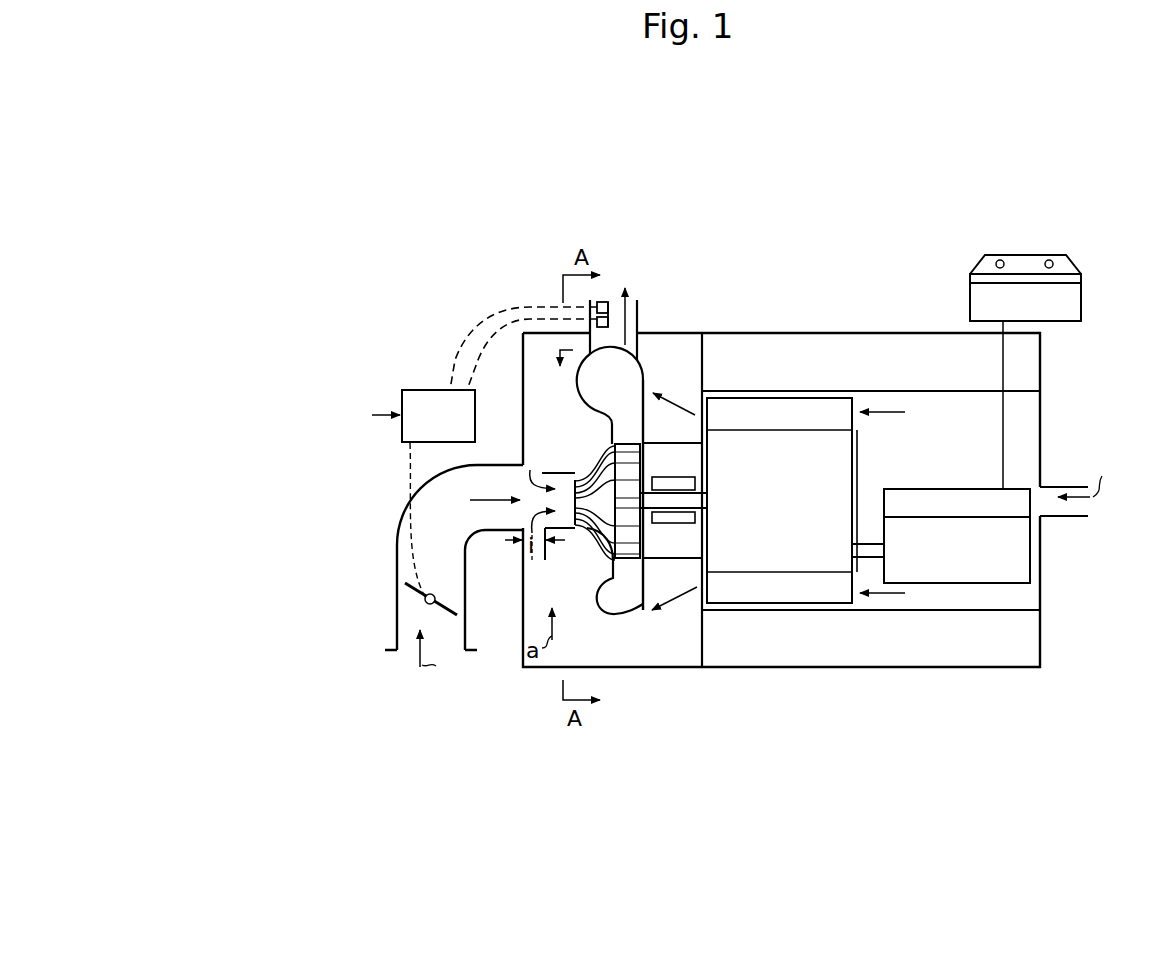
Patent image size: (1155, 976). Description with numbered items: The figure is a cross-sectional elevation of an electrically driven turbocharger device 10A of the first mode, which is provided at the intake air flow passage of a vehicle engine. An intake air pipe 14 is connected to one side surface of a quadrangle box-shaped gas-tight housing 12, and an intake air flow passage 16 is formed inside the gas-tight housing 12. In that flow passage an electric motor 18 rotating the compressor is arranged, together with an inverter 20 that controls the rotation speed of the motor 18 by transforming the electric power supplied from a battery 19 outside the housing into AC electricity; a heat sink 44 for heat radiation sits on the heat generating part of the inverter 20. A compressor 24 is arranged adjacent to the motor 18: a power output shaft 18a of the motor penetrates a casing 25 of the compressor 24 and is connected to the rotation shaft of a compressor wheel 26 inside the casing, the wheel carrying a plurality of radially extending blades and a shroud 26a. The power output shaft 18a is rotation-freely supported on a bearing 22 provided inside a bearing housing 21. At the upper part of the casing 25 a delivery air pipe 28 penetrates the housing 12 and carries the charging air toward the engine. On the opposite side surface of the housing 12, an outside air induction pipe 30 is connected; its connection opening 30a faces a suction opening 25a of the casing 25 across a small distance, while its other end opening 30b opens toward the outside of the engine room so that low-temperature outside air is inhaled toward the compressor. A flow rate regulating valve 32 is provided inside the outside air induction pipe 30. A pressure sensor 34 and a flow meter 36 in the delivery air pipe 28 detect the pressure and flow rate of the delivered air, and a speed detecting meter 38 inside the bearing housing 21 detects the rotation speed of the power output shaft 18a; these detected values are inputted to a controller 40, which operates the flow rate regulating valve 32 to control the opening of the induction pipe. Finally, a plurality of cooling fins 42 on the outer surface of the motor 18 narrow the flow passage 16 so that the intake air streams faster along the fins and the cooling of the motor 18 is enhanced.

The electrically driven turbocharger device 10A is at (790, 172).
The gas-tight housing 12 is at (947, 333).
The intake air pipe 14 is at (1068, 516).
The intake air flow passage 16 is at (884, 391).
The electric motor 18 is at (828, 573).
The power output shaft 18a is at (648, 482).
The battery 19 is at (1081, 290).
The inverter 20 is at (985, 583).
The bearing housing 21 is at (700, 563).
The bearing 22 is at (687, 485).
The compressor 24 is at (600, 440).
The casing 25 is at (645, 372).
The suction opening 25a is at (542, 473).
The compressor wheel 26 is at (585, 528).
The impeller shroud 26a is at (622, 552).
The delivery air pipe 28 is at (640, 322).
The outside air induction pipe 30 is at (397, 580).
The connection opening 30a is at (522, 478).
The end opening 30b is at (400, 652).
The flow rate regulating valve 32 is at (455, 618).
The pressure sensor 34 is at (610, 300).
The flow meter 36 is at (601, 300).
The speed detecting meter 38 is at (674, 588).
The controller 40 is at (437, 390).
The cooling fins 42 is at (800, 398).
The heat sink 44 is at (960, 489).